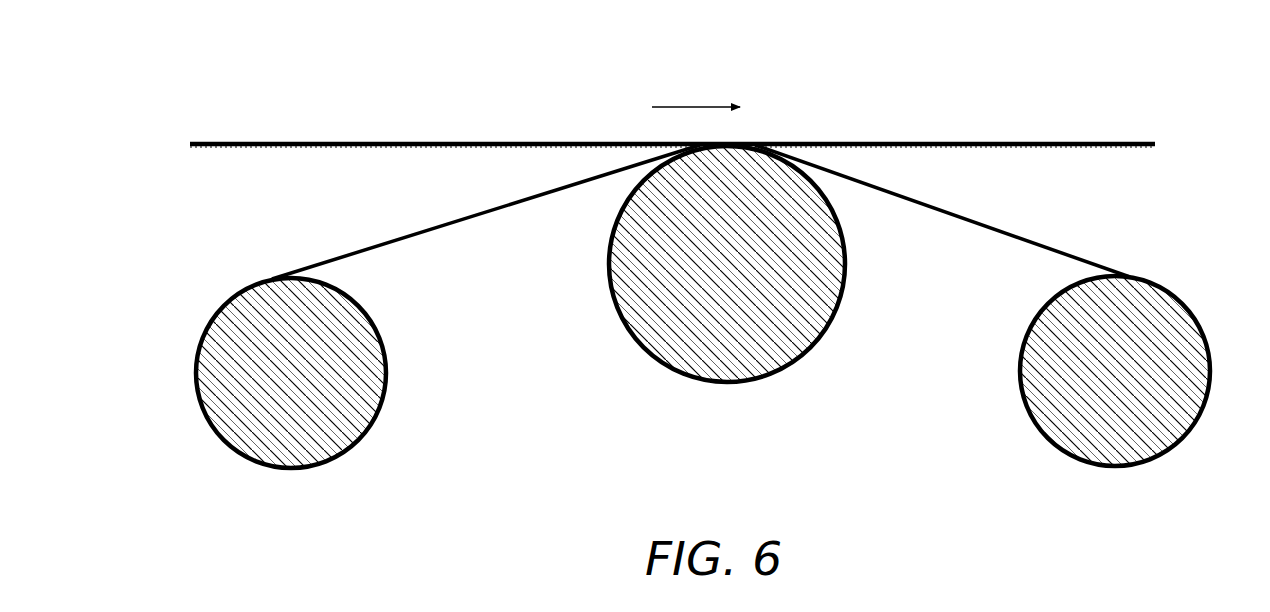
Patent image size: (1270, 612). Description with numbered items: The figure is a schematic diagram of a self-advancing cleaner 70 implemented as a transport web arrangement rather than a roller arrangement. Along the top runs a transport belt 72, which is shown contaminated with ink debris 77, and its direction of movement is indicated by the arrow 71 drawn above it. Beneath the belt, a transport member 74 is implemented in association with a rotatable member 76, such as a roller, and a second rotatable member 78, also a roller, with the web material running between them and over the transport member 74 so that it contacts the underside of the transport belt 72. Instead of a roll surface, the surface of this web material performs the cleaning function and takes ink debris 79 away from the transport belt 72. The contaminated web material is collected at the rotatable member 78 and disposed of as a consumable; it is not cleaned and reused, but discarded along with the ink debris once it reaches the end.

The self-advancing cleaner 70 is at (947, 72).
The arrow 71 is at (693, 106).
The transport belt 72 is at (1062, 140).
The transport member 74 is at (782, 337).
The rotatable member 76 is at (357, 442).
The ink debris 77 is at (308, 148).
The rotatable member 78 is at (1080, 460).
The ink debris 79 is at (963, 218).